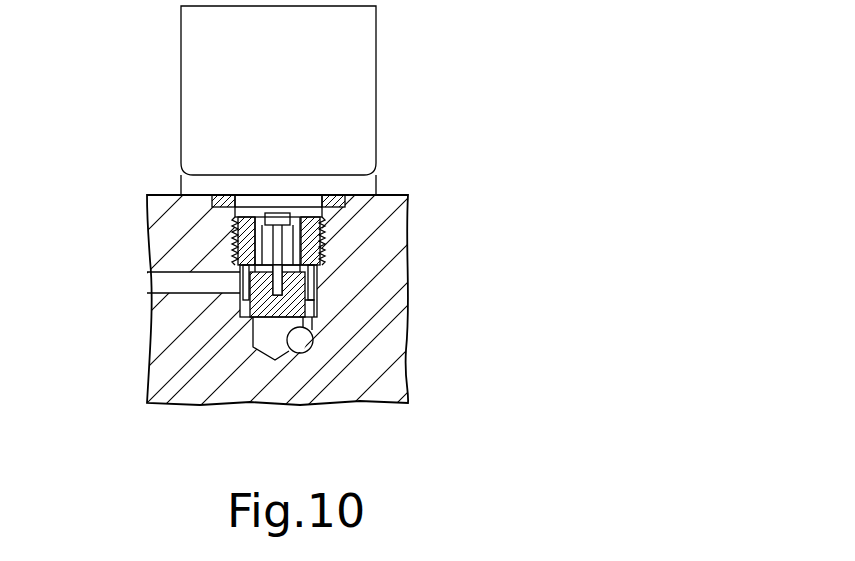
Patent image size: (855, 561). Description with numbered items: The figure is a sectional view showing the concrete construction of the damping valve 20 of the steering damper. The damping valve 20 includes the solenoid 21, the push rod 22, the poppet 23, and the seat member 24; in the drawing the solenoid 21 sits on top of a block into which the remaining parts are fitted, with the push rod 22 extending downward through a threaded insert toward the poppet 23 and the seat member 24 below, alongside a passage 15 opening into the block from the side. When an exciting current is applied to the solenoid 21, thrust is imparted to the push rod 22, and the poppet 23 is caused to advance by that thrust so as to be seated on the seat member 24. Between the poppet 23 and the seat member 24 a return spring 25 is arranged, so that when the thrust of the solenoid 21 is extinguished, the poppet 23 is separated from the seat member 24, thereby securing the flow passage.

The supply channel 15 is at (177, 285).
The damping valve 20 is at (137, 200).
The solenoid 21 is at (375, 90).
The push rod 22 is at (277, 245).
The poppet 23 is at (320, 283).
The seat member 24 is at (248, 318).
The return spring 25 is at (315, 307).